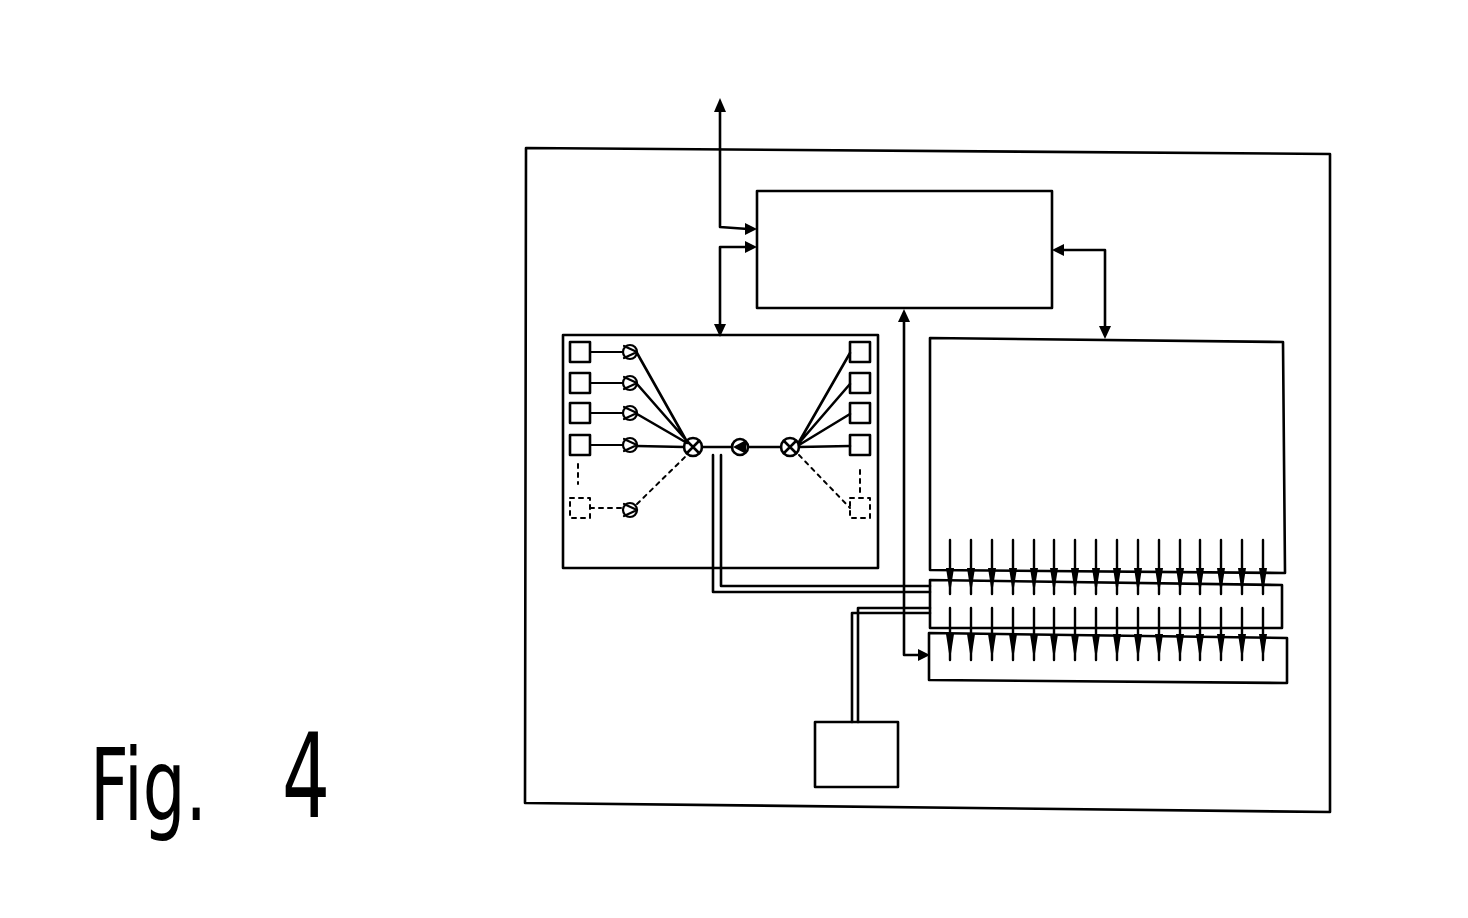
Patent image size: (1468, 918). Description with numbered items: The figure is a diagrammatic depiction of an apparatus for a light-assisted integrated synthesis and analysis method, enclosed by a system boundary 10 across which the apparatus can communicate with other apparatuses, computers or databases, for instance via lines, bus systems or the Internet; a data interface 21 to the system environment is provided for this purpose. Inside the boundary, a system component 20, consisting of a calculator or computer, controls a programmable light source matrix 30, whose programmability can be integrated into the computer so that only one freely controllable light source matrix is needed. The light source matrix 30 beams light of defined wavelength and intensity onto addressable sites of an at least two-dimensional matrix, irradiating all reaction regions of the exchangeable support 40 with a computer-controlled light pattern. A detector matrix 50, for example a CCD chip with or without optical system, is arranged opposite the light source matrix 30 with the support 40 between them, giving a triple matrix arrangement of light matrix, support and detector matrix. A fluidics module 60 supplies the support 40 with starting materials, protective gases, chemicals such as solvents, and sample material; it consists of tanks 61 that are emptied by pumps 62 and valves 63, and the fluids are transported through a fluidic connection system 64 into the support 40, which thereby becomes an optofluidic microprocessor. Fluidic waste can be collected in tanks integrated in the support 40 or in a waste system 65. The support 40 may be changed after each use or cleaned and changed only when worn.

The system boundary 10 is at (1300, 148).
The system component 20 is at (867, 191).
The data interface 21 is at (727, 128).
The programmable light source matrix 30 is at (1288, 438).
The exchangeable support 40 is at (1286, 612).
The detector matrix 50 is at (1281, 684).
The fluidics module 60 is at (648, 480).
The tanks 61 is at (562, 510).
The pumps 62 is at (630, 518).
The valves 63 is at (699, 437).
The fluidic connection system 64 is at (748, 594).
The waste system 65 is at (893, 750).